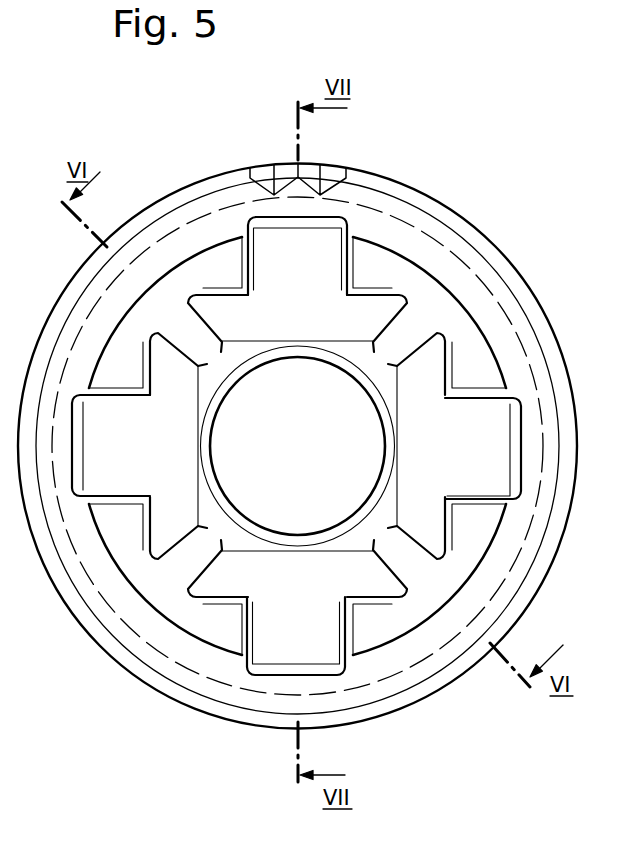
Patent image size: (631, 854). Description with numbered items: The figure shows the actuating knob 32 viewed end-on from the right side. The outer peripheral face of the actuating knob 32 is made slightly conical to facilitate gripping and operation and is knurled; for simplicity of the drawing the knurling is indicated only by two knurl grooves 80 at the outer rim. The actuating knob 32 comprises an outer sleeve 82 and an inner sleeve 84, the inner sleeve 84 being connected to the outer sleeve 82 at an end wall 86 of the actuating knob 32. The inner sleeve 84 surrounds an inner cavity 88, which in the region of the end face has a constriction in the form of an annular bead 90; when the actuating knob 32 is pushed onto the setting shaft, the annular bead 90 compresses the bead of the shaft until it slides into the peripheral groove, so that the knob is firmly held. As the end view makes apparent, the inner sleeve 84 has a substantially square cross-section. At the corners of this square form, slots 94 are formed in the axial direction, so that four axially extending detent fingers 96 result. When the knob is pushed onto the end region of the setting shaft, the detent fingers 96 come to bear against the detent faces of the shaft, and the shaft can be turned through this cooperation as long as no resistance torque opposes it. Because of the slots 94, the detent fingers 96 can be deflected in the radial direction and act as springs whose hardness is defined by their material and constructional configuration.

The actuating knob 32 is at (489, 226).
The knurl grooves 80 is at (313, 173).
The outer sleeve 82 is at (531, 594).
The inner sleeve 84 is at (405, 593).
The end wall 86 is at (474, 525).
The inner cavity 88 is at (292, 512).
The annular bead 90 is at (212, 463).
The slots 94 is at (192, 594).
The detent fingers 96 is at (368, 583).